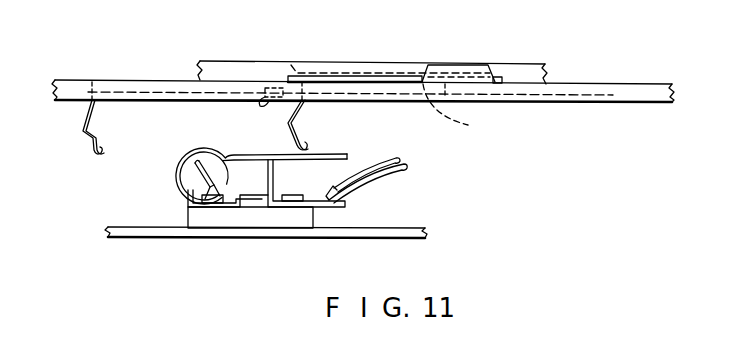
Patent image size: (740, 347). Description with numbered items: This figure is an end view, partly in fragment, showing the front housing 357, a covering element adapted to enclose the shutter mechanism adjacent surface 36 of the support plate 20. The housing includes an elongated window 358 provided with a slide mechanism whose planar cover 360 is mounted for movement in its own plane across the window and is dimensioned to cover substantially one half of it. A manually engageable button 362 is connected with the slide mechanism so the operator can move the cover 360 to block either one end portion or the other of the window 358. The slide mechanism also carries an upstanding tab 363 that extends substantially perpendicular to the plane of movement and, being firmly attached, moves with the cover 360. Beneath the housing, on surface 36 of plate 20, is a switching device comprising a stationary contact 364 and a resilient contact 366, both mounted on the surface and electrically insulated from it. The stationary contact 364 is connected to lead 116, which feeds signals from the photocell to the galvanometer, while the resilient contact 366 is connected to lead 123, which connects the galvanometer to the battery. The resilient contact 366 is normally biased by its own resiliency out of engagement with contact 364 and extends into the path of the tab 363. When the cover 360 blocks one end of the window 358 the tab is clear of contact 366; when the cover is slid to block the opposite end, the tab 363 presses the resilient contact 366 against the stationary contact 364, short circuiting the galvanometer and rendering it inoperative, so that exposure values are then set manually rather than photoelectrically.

The front housing 357 is at (560, 90).
The planar cover 360 is at (384, 76).
The button 362 is at (468, 64).
The elongated window 358 is at (464, 110).
The tab 363 is at (299, 133).
The resilient contact 366 is at (252, 155).
The electrical conductive lead 123 is at (228, 182).
The lead 116 is at (361, 184).
The stationary contact 364 is at (288, 208).
The surface 36 is at (398, 228).
The support plate 20 is at (412, 243).